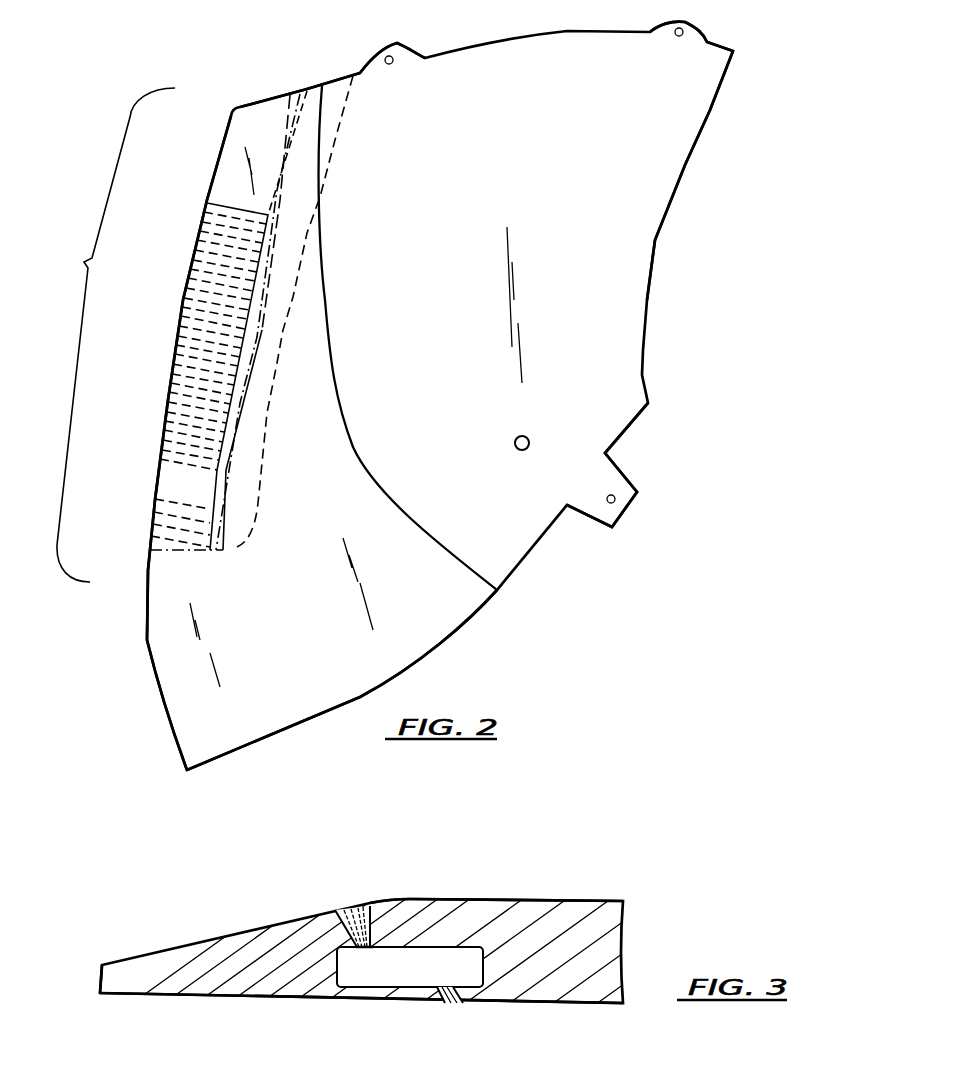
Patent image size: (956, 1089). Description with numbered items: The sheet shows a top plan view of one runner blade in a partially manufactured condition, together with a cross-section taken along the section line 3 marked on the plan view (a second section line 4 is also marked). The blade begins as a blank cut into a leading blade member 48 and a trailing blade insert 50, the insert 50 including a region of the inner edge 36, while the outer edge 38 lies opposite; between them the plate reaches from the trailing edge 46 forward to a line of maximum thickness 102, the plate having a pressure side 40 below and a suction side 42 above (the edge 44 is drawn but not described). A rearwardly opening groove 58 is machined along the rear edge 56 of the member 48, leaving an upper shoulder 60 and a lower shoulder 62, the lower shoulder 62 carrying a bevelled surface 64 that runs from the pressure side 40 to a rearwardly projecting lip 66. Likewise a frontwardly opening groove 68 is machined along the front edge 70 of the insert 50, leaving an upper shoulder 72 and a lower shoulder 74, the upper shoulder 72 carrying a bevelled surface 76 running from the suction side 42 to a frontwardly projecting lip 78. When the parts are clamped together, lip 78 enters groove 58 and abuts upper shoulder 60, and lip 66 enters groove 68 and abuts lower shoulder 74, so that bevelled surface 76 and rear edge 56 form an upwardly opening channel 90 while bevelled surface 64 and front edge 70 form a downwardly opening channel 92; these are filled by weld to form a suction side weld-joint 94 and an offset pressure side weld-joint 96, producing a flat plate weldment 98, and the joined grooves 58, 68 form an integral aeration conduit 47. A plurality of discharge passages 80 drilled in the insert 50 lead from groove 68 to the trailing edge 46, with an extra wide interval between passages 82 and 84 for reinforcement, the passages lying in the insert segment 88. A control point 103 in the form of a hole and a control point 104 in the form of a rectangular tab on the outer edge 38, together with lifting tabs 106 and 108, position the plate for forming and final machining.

In FIG. 2, the inner edge 36 is at (269, 101).
In FIG. 2, the outer edge 38 is at (468, 630).
In FIG. 3, the pressure side 40 is at (609, 1008).
In FIG. 3, the suction side 42 is at (603, 900).
In FIG. 2, the side edge 44 is at (686, 166).
In FIG. 2, the trailing edge 46 is at (148, 639).
In FIG. 3, the trailing edge 46 is at (100, 983).
In FIG. 2, the aeration conduit 47 is at (346, 60).
In FIG. 3, the aeration conduit 47 is at (395, 973).
In FIG. 2, the leading blade member 48 is at (655, 242).
In FIG. 3, the leading blade member 48 is at (607, 947).
In FIG. 2, the trailing blade insert 50 is at (112, 335).
In FIG. 3, the rear edge 56 is at (372, 907).
In FIG. 3, the rearwardly opening groove 58 is at (471, 973).
In FIG. 3, the upper shoulder 60 is at (383, 928).
In FIG. 3, the lower shoulder 62 is at (463, 990).
In FIG. 3, the bevelled surface 64 is at (452, 988).
In FIG. 3, the rearwardly projecting lip 66 is at (440, 988).
In FIG. 3, the frontwardly opening groove 68 is at (346, 977).
In FIG. 3, the front edge 70 is at (446, 985).
In FIG. 3, the upper shoulder 72 is at (340, 938).
In FIG. 3, the lower shoulder 74 is at (400, 993).
In FIG. 3, the bevelled surface 76 is at (351, 943).
In FIG. 3, the frontwardly projecting lip 78 is at (378, 943).
In FIG. 2, the discharge passages 80 is at (204, 240).
In FIG. 2, the discharge passage 82 is at (156, 455).
In FIG. 2, the discharge passage 84 is at (153, 508).
In FIG. 3, the insert segment 88 is at (140, 963).
In FIG. 3, the upwardly opening channel 90 is at (356, 878).
In FIG. 3, the downwardly opening channel 92 is at (440, 1029).
In FIG. 3, the suction side weld-joint 94 is at (352, 942).
In FIG. 3, the pressure side weld-joint 96 is at (455, 987).
In FIG. 2, the flat plate weldment 98 is at (675, 455).
In FIG. 2, the line of maximum thickness 102 is at (401, 511).
In FIG. 3, the line of maximum thickness 102 is at (416, 900).
In FIG. 2, the control point 103 is at (530, 440).
In FIG. 2, the control point 104 is at (622, 514).
In FIG. 2, the lifting tab 106 is at (704, 30).
In FIG. 2, the lifting tab 108 is at (415, 43).
In FIG. 2, the section line 3— 3 is at (332, 215).
In FIG. 2, the section line 4— 4 is at (311, 410).